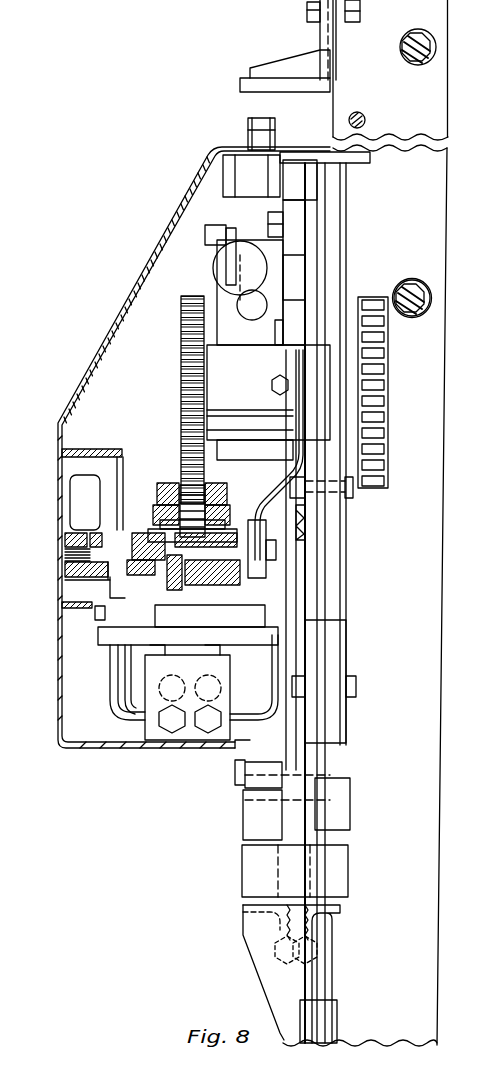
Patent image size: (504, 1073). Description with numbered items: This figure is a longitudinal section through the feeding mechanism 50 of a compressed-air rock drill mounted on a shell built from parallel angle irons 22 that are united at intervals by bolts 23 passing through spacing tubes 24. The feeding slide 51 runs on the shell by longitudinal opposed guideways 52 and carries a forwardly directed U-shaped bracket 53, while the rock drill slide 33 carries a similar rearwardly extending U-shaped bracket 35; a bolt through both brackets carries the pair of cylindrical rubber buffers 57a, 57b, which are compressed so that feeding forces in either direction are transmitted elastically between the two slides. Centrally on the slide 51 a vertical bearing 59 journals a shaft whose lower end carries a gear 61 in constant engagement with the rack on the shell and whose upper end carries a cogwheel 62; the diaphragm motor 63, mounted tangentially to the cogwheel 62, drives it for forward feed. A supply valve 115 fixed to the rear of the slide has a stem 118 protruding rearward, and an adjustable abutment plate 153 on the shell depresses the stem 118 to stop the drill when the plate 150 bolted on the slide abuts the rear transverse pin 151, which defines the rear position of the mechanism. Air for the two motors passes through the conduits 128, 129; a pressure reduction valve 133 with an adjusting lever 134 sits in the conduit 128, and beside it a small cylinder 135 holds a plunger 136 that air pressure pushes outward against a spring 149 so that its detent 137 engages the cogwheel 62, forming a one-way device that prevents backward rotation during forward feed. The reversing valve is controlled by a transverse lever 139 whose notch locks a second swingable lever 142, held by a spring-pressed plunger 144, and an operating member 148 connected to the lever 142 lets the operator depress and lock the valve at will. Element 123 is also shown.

The angle irons 22 is at (425, 612).
The bolts 23 is at (422, 299).
The spacing tubes 24 is at (427, 314).
The slide 33 is at (305, 1020).
The U-shaped bracket 35 is at (258, 935).
The feeding mechanism 50 is at (121, 311).
The slide 51 is at (313, 611).
The guideways 52 is at (330, 715).
The U-shaped bracket 53 is at (258, 820).
The rubber buffer 57a is at (260, 877).
The rubber buffer 57b is at (330, 812).
The vertical bearing 59 is at (260, 375).
The gear 61 is at (373, 386).
The cogwheel 62 is at (193, 325).
The pressure fluid driven motor 63 is at (162, 686).
The supply valve 115 is at (250, 210).
The stem 118 is at (255, 125).
The hex nut 123 is at (265, 238).
The conduit 128 is at (285, 497).
The conduit 129 is at (290, 527).
The pressure reduction valve 133 is at (112, 580).
The lever 134 is at (80, 507).
The small cylinder 135 is at (162, 502).
The plunger 136 is at (160, 527).
The detent 137 is at (193, 490).
The transverse lever 139 is at (295, 237).
The second swingable lever 142 is at (295, 267).
The spring-pressed plunger 144 is at (296, 201).
The operating member 148 is at (225, 270).
The spring 149 is at (187, 522).
The plate 150 is at (345, 161).
The rear transverse pin 151 is at (364, 116).
The abutment plate 153 is at (250, 84).